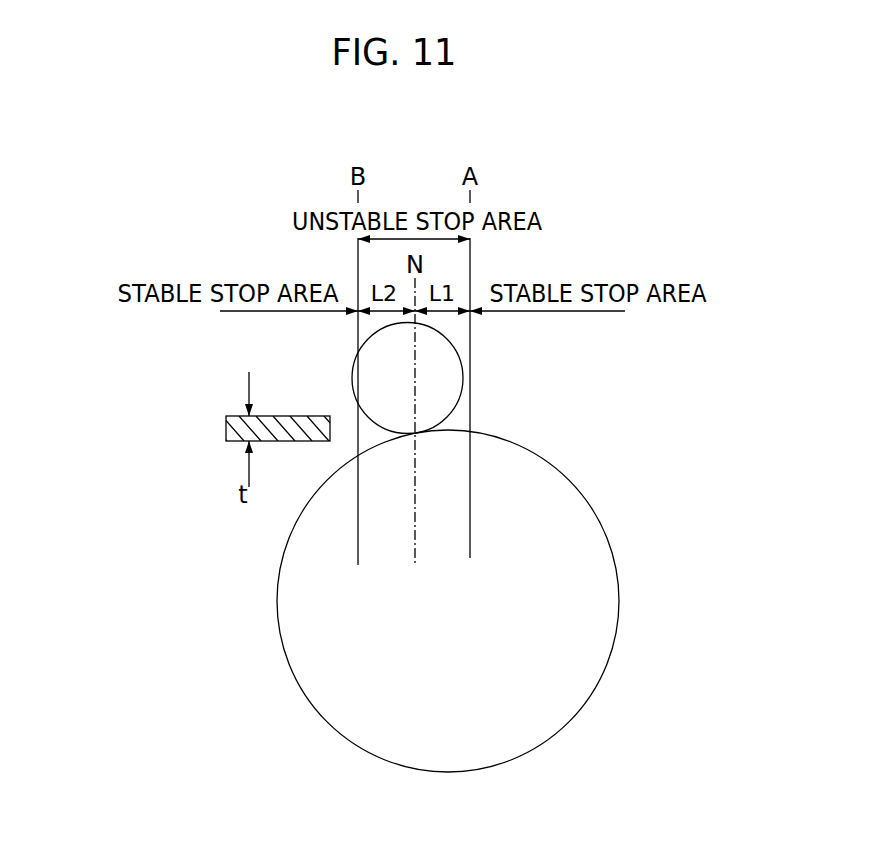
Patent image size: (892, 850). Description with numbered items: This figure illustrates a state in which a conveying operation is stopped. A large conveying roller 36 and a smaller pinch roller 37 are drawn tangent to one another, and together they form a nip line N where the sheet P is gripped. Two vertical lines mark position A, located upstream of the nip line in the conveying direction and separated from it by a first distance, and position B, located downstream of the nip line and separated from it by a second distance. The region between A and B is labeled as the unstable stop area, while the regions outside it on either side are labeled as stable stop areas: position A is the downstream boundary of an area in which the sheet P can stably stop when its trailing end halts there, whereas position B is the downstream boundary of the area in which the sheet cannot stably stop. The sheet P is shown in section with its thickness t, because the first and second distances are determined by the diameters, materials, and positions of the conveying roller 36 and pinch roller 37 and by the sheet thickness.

The conveying roller 36 is at (567, 693).
The pinch roller 37 is at (438, 390).
The sheet P is at (295, 416).